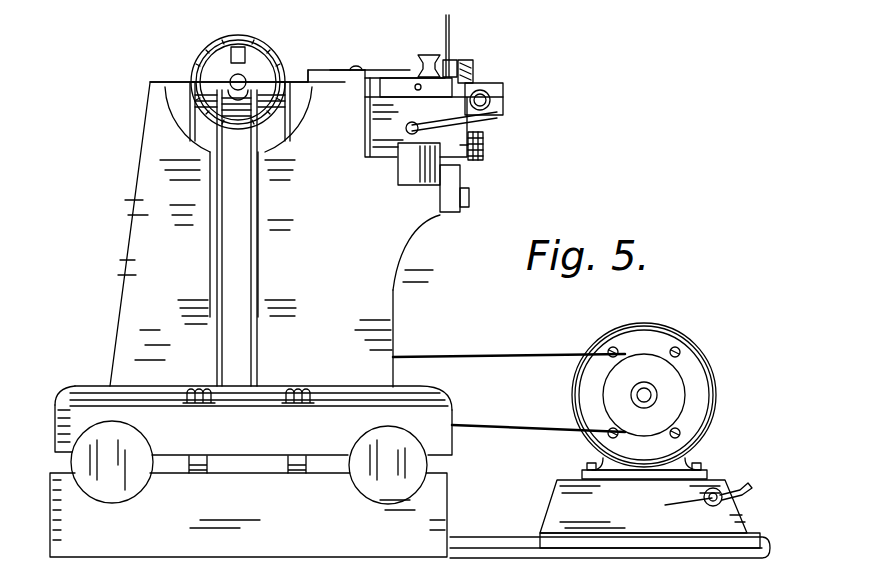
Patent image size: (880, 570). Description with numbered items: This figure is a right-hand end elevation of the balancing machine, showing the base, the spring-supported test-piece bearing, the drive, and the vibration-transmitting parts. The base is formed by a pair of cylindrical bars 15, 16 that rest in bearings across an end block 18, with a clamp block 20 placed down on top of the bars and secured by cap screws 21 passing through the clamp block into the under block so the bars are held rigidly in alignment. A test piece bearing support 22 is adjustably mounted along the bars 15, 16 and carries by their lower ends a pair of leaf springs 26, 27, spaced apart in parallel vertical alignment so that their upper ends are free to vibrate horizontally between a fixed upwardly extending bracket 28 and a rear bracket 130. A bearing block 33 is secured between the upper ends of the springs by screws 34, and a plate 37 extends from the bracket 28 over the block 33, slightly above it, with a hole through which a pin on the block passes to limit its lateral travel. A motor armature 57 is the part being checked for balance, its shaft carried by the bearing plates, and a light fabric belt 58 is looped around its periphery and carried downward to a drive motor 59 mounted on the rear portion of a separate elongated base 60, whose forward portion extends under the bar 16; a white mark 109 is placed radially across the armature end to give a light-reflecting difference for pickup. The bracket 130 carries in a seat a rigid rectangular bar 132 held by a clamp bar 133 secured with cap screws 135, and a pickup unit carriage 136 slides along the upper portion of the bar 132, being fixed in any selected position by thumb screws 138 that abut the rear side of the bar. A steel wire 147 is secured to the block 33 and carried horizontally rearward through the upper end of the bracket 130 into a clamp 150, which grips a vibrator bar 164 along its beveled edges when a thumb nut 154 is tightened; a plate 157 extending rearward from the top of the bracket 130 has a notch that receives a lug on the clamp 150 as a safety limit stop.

The bar 15 is at (112, 492).
The bar 16 is at (416, 466).
The end block 18 is at (442, 500).
The clamp block 20 is at (56, 437).
The cap screws 21 is at (198, 390).
The test piece bearing support 22 is at (70, 386).
The leaf spring 26 is at (216, 253).
The leaf spring 27 is at (256, 268).
The bracket 28 is at (126, 279).
The bearing block 33 is at (237, 112).
The screws 34 is at (260, 110).
The plate 37 is at (182, 81).
The motor armature 57 is at (246, 50).
The belt 58 is at (190, 109).
The drive motor 59 is at (712, 393).
The base 60 is at (540, 502).
The white mark 109 is at (232, 46).
The bracket 130 is at (385, 283).
The bar 132 is at (410, 182).
The clamp bar 133 is at (448, 214).
The cap screws 135 is at (470, 200).
The pickup unit carriage 136 is at (379, 155).
The thumb screws 138 is at (487, 161).
The steel wire 147 is at (307, 72).
The clamp 150 is at (388, 77).
The thumb nut 154 is at (428, 54).
The plate 157 is at (357, 69).
The vibrator bar 164 is at (400, 99).